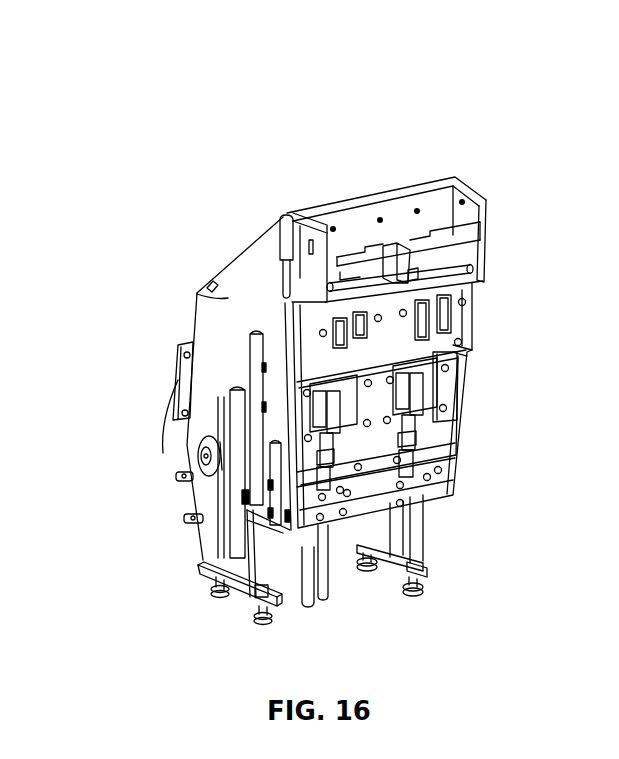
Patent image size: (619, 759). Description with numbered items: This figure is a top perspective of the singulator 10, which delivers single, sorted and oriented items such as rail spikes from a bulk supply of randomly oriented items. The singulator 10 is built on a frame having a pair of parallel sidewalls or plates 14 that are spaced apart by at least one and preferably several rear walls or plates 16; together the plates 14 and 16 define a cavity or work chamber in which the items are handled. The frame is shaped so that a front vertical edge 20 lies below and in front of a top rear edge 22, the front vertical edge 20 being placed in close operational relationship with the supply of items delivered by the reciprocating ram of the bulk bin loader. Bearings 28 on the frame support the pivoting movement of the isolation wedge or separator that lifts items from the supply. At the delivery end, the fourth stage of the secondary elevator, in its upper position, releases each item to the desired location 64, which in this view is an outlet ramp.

The singulator 10 is at (411, 80).
The sidewalls or plates 14 is at (197, 293).
The rear walls or plates 16 is at (457, 213).
The front vertical edge 20 is at (187, 447).
The top rear edge 22 is at (465, 184).
The bearings 28 is at (213, 480).
The desired location 64 is at (551, 271).